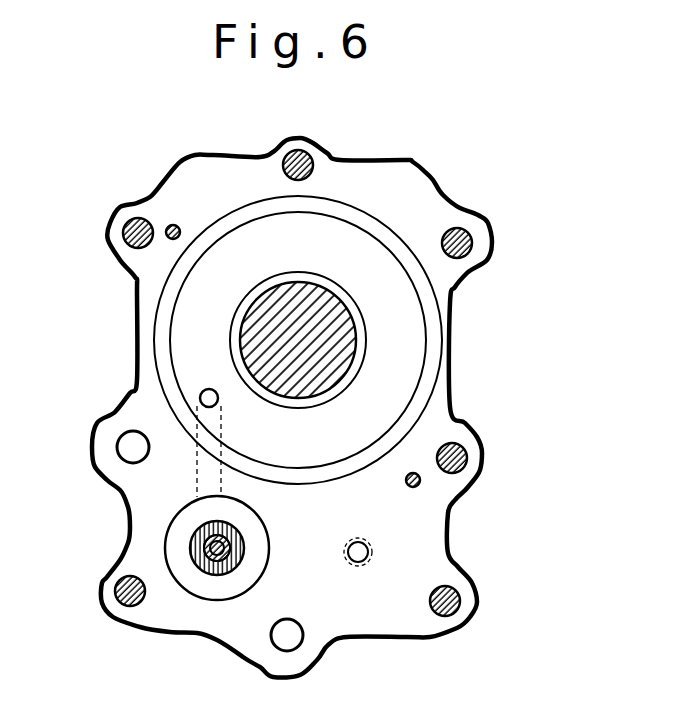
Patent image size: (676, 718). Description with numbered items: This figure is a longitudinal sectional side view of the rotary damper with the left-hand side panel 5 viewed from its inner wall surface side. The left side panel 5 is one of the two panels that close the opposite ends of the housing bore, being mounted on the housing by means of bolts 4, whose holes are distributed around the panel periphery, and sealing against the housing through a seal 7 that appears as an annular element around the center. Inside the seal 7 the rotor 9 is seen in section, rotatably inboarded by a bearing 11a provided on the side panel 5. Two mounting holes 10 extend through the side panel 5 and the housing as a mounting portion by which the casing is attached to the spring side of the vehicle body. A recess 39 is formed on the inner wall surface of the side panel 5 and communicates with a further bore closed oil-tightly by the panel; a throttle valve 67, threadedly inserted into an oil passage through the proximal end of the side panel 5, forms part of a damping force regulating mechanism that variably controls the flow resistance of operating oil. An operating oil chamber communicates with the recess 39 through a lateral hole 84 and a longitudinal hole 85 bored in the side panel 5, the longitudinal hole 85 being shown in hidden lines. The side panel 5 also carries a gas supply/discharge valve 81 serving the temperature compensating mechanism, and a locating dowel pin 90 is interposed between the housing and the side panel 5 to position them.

The bolts 4 is at (303, 157).
The left side panel 5 is at (198, 178).
The seal 7 is at (432, 353).
The rotor 9 is at (312, 380).
The mounting holes 10 is at (126, 441).
The bearing 11a is at (338, 295).
The recess 39 is at (218, 592).
The throttle valve 67 is at (215, 548).
The gas supply/discharge valve 81 is at (368, 552).
The lateral hole 84 is at (198, 399).
The longitudinal hole 85 is at (194, 468).
The pin 90 is at (172, 225).